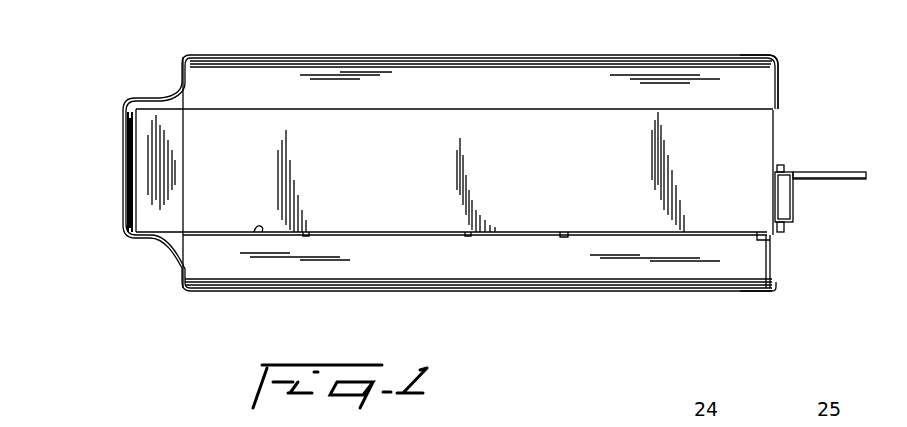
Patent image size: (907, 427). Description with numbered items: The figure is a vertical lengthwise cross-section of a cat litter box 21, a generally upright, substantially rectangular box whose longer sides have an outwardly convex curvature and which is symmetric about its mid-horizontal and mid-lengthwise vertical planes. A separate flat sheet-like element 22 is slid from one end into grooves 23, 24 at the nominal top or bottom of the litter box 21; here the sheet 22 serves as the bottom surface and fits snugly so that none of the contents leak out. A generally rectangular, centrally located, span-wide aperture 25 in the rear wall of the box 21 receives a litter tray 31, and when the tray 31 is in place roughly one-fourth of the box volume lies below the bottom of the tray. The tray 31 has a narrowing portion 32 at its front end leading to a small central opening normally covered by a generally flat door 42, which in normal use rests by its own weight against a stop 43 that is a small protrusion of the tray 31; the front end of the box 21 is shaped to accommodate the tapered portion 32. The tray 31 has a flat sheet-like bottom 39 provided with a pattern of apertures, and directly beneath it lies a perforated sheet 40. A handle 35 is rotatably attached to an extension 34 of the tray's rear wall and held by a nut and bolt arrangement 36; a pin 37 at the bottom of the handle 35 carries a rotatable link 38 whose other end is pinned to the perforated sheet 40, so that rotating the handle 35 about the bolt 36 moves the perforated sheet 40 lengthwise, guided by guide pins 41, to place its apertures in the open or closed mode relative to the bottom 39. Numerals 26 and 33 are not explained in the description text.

The cat litter box 21 is at (547, 80).
The sheet-like element 22 is at (776, 286).
The groove 23 is at (480, 286).
The groove 24 is at (262, 56).
The aperture 25 is at (775, 108).
The left end wall 26 is at (122, 120).
The litter tray 31 is at (660, 218).
The narrowing portion 32 is at (152, 240).
The inner wall 33 is at (775, 132).
The extension 34 is at (784, 186).
The handle 35 is at (856, 172).
The nut and bolt arrangement 36 is at (785, 166).
The pin 37 is at (786, 230).
The link 38 is at (772, 262).
The sheet-like bottom 39 is at (256, 230).
The perforated sheet 40 is at (564, 238).
The guide pin 41 is at (305, 238).
The door 42 is at (130, 170).
The stop 43 is at (130, 226).